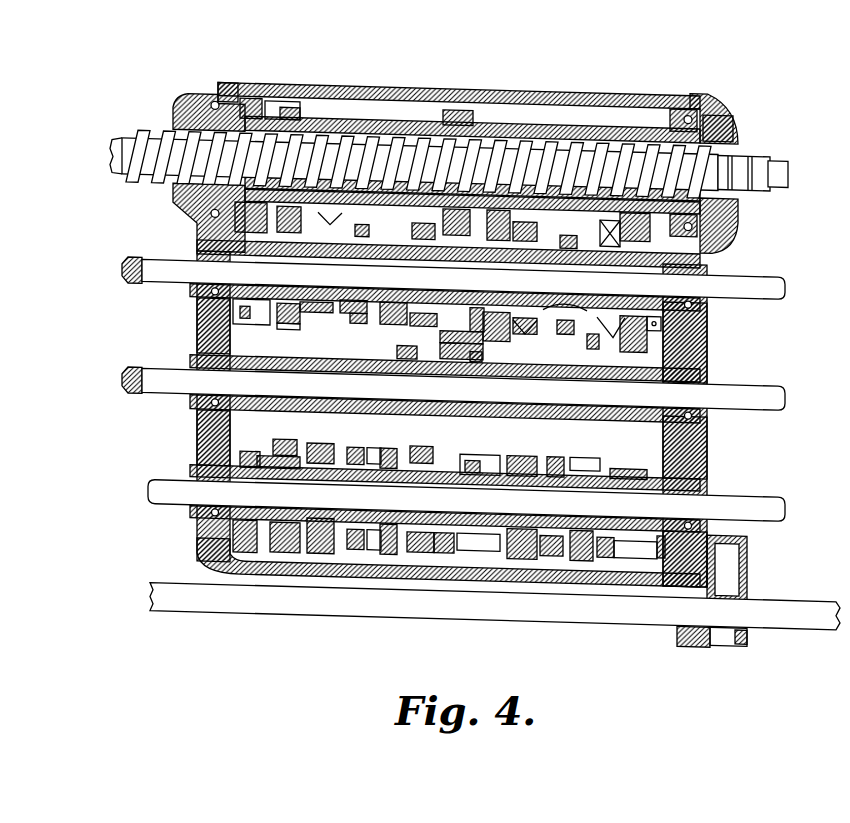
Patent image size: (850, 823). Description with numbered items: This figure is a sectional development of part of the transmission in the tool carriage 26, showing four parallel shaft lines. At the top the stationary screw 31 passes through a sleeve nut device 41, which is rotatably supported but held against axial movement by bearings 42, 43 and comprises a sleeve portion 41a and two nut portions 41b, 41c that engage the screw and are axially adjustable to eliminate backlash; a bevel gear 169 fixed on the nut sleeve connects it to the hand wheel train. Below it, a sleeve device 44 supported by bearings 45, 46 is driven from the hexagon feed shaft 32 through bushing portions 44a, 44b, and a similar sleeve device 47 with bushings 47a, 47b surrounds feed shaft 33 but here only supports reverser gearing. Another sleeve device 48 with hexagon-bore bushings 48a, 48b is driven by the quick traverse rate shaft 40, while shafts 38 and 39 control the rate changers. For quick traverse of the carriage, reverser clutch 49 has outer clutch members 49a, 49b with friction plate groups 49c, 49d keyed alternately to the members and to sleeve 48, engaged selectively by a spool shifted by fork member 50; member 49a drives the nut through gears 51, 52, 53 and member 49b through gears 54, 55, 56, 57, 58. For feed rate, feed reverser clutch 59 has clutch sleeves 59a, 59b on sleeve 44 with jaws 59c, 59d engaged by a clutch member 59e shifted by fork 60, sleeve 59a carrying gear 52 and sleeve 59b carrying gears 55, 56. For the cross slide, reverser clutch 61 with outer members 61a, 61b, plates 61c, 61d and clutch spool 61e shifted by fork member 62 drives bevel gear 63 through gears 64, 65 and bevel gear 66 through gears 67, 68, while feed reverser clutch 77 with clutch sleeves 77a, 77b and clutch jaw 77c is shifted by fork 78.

The carriage 26 is at (482, 99).
The stationary screw 31 is at (115, 166).
The feed shaft 32 is at (122, 277).
The feed shaft 33 is at (120, 387).
The shaft 38 is at (828, 610).
The shaft 39 is at (802, 607).
The quick traverse rate shaft 40 is at (148, 500).
The sleeve nut device 41 is at (583, 96).
The sleeve portion 41a is at (518, 98).
The nut portion 41b is at (240, 98).
The nut portion 41c is at (738, 107).
The bearing 42 is at (185, 102).
The bearing 43 is at (715, 93).
The sleeve device 44 is at (285, 287).
The bushing portion 44a is at (200, 269).
The bushing portion 44b is at (713, 296).
The bearing 45 is at (210, 323).
The bearing 46 is at (713, 236).
The sleeve device 47 is at (280, 423).
The bushing 47a is at (200, 413).
The bushing 47b is at (670, 377).
The sleeve device 48 is at (460, 553).
The bushing 48a is at (195, 534).
The bushing 48b is at (680, 507).
The reverser clutch 49 is at (362, 556).
The outer clutch member 49a is at (305, 557).
The outer clutch member 49b is at (397, 555).
The clutch friction plates 49c is at (300, 584).
The clutch friction plates 49d is at (428, 554).
The fork member 50 is at (335, 581).
The gear 51 is at (235, 584).
The gear 52 is at (280, 335).
The gear 53 is at (298, 104).
The gear 54 is at (435, 555).
The gear 55 is at (440, 325).
The gear 56 is at (440, 338).
The gear 57 is at (480, 450).
The gear 58 is at (458, 108).
The feed reverser clutch 59 is at (415, 106).
The clutch sleeve 59a is at (313, 328).
The clutch sleeve 59b is at (351, 327).
The clutch jaws 59c is at (309, 221).
The clutch jaws 59d is at (407, 232).
The clutch member 59e is at (354, 224).
The fork 60 is at (334, 303).
The reverser clutch 61 is at (572, 550).
The outer clutch member 61a is at (525, 551).
The outer clutch member 61b is at (598, 549).
The clutch friction plates 61c is at (512, 551).
The clutch friction plates 61d is at (612, 548).
The clutch spool 61e is at (545, 550).
The fork member 62 is at (560, 447).
The bevel gear 63 is at (518, 332).
The gear 64 is at (522, 454).
The gear 65 is at (524, 341).
The bevel gear 66 is at (600, 335).
The gear 67 is at (622, 447).
The gear 68 is at (622, 342).
The feed reverser clutch 77 is at (622, 105).
The clutch sleeve 77a is at (531, 226).
The clutch sleeve 77b is at (606, 229).
The clutch jaw 77c is at (558, 293).
The fork 78 is at (587, 352).
The bevel gear 169 is at (345, 108).